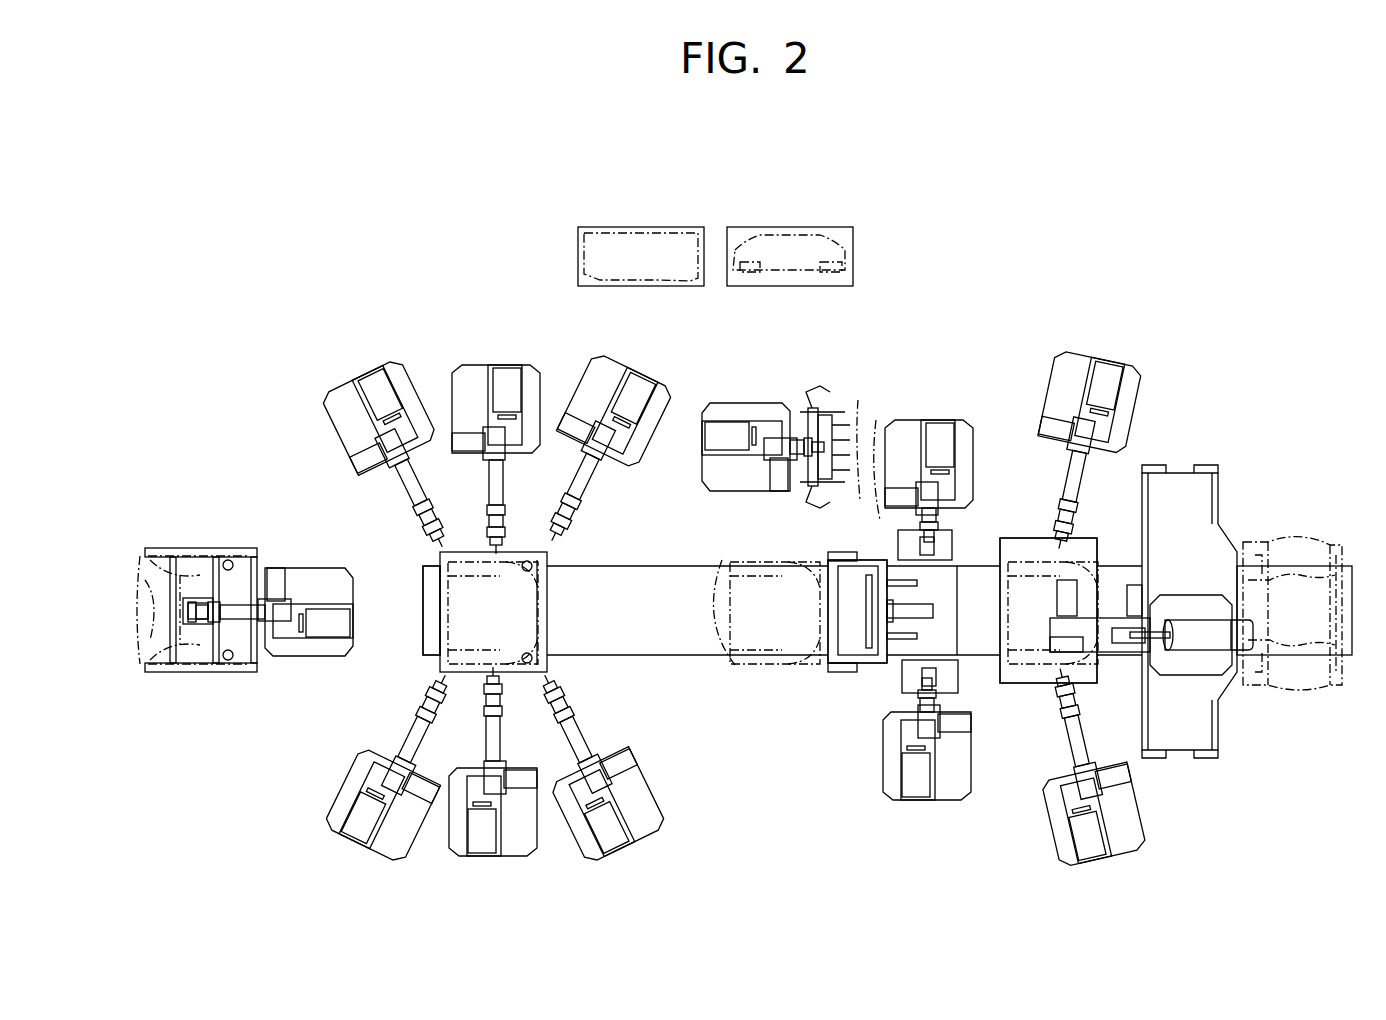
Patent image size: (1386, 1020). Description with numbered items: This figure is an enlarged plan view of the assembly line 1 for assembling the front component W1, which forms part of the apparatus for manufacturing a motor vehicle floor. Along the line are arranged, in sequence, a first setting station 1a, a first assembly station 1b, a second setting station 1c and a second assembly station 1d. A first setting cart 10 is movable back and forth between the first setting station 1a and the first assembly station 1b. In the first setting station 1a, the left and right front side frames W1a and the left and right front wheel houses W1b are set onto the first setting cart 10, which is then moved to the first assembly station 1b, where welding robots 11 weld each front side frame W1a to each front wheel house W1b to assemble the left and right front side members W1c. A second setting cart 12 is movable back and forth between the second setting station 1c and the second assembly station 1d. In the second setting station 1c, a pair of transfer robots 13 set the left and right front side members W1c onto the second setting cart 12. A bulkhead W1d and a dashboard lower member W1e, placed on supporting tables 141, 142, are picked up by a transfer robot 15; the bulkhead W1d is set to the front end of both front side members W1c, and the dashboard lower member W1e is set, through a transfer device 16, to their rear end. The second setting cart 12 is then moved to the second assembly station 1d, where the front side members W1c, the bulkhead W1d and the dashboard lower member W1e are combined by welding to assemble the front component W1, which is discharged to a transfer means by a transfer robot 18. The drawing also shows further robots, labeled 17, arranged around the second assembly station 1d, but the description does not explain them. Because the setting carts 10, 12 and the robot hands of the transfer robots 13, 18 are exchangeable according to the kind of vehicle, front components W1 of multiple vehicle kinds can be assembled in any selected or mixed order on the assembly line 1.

The assembly line 1 is at (428, 320).
The first setting station 1a is at (1300, 756).
The first assembly station 1b is at (1018, 800).
The second setting station 1c is at (778, 736).
The second assembly station 1d is at (403, 678).
The first setting cart 10 is at (1008, 540).
The welding robots 11 is at (1105, 360).
The second setting cart 12 is at (552, 566).
The transfer robots 13 is at (935, 430).
The supporting table 141 is at (763, 236).
The supporting table 142 is at (618, 236).
The transfer robot 15 is at (760, 430).
The transfer device 16 is at (872, 667).
The welding robot 17 is at (378, 385).
The transfer robot 18 is at (315, 600).
The front component W1 is at (195, 555).
The front side frames W1a is at (1325, 580).
The front wheel houses W1b is at (1278, 538).
The front side members W1c is at (478, 545).
The bulkhead W1d is at (805, 235).
The dashboard lower member W1e is at (674, 232).